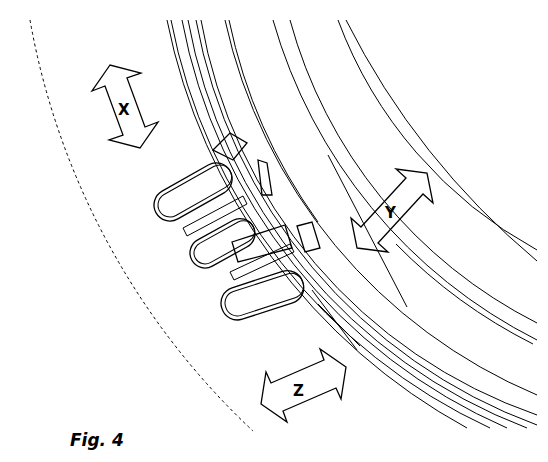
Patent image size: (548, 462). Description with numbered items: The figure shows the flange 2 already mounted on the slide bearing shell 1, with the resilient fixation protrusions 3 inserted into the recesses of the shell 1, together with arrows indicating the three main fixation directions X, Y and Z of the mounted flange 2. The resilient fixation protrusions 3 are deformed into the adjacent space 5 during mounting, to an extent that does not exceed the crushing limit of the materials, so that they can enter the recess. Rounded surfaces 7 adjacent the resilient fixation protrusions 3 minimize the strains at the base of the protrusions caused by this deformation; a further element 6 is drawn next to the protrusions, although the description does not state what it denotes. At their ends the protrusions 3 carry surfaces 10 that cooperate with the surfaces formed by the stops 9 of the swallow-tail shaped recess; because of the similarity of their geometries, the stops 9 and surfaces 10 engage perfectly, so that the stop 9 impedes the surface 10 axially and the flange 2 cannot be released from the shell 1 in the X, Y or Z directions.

The shell 1 is at (360, 124).
The flange 2 is at (83, 118).
The resilient fixation protrusions 3 is at (189, 229).
The space 5 is at (213, 251).
The clip 6 is at (238, 167).
The rounded surfaces 7 is at (225, 320).
The stops 9 is at (310, 238).
The surfaces 10 is at (248, 196).